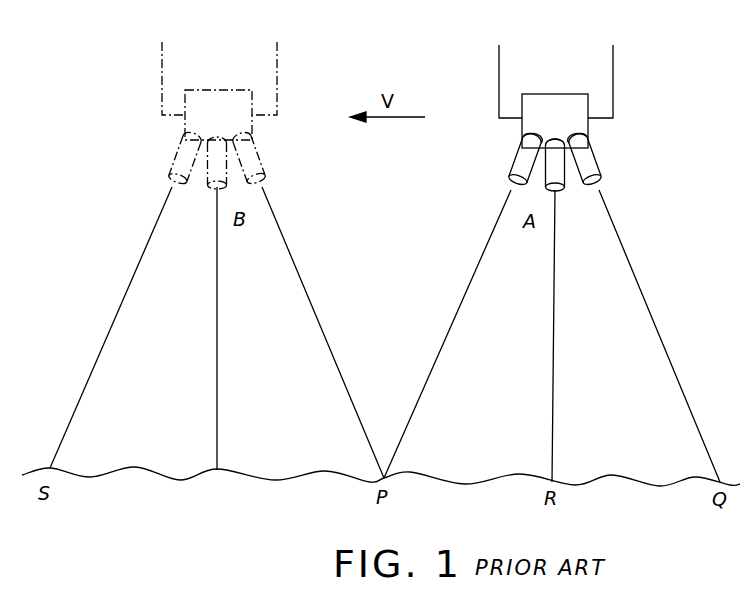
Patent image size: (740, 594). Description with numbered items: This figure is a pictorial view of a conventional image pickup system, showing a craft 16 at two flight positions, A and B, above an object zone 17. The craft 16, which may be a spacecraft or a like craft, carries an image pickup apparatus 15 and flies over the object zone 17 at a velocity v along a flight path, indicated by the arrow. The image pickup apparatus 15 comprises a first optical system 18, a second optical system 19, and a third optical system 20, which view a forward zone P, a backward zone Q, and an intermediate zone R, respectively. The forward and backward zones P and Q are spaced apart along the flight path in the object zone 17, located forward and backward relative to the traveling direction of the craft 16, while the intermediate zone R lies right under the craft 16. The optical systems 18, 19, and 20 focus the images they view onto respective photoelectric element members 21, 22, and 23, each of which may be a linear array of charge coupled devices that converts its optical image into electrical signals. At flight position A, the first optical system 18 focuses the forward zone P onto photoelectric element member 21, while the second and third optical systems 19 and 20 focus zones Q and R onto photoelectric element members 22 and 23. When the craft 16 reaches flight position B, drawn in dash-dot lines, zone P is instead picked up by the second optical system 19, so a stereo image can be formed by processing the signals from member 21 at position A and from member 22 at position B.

The image pickup apparatus 15 is at (555, 94).
The craft 16 is at (613, 70).
The object zone 17 is at (607, 476).
The first optical system 18 is at (515, 165).
The second optical system 19 is at (598, 166).
The third optical system 20 is at (565, 185).
The first photoelectric element member 21 is at (530, 136).
The second photoelectric element member 22 is at (582, 138).
The third photoelectric element member 23 is at (555, 147).